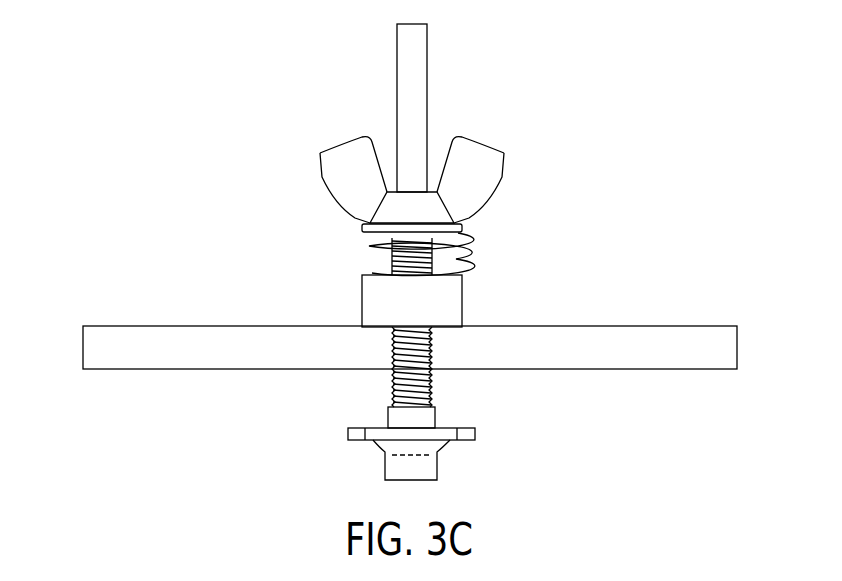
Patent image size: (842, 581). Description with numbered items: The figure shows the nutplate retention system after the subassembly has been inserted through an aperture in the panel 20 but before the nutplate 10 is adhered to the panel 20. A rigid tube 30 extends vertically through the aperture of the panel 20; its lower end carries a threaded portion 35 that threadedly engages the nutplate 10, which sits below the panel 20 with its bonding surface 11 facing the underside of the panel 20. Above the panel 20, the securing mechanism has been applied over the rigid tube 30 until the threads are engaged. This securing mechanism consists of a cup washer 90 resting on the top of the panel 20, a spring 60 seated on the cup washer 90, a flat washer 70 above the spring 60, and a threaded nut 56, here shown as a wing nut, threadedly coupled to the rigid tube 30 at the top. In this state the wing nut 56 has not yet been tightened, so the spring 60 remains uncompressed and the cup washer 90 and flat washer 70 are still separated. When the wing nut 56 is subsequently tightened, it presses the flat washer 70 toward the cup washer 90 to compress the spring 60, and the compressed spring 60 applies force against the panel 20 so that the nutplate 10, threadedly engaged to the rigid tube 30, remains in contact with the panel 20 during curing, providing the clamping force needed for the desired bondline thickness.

The rigid tube 30 is at (372, 64).
The threaded nut 56 is at (493, 165).
The flat washer 70 is at (463, 229).
The spring 60 is at (369, 247).
The cup washer 90 is at (362, 308).
The panel 20 is at (665, 340).
The threaded portion 35 is at (430, 388).
The bonding surface 11 is at (366, 428).
The nutplate 10 is at (438, 467).